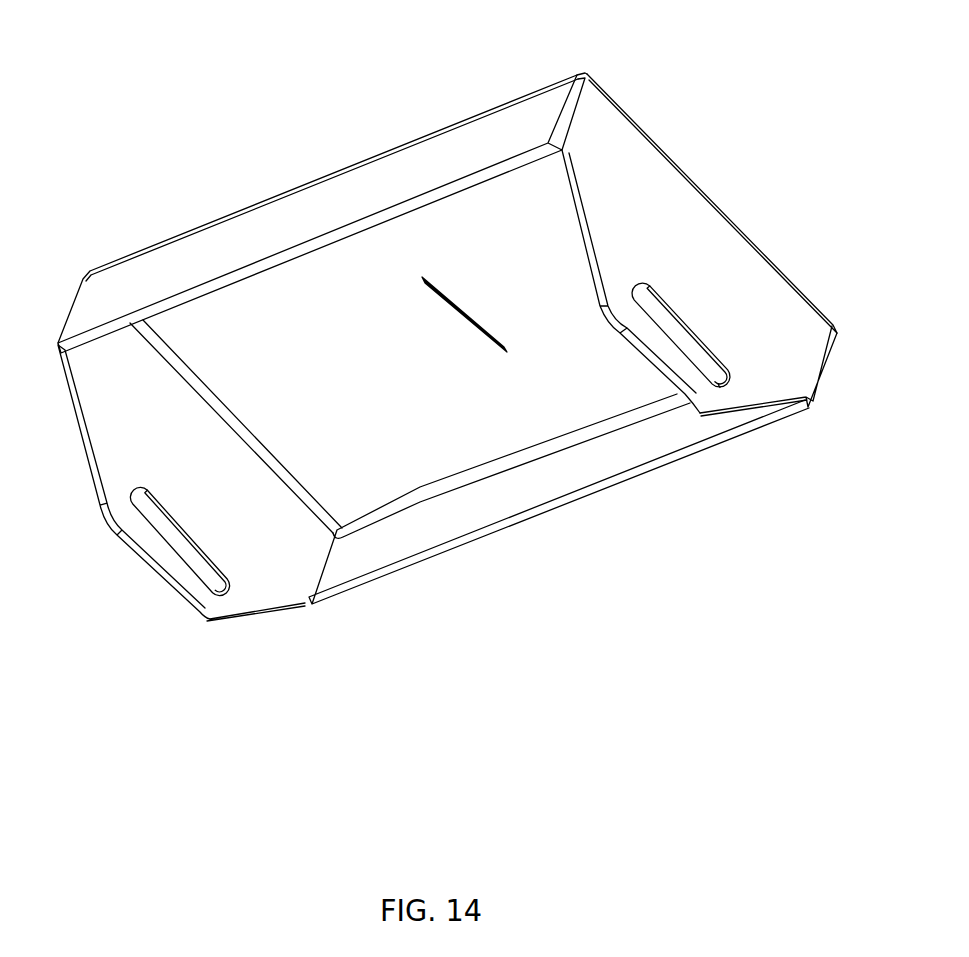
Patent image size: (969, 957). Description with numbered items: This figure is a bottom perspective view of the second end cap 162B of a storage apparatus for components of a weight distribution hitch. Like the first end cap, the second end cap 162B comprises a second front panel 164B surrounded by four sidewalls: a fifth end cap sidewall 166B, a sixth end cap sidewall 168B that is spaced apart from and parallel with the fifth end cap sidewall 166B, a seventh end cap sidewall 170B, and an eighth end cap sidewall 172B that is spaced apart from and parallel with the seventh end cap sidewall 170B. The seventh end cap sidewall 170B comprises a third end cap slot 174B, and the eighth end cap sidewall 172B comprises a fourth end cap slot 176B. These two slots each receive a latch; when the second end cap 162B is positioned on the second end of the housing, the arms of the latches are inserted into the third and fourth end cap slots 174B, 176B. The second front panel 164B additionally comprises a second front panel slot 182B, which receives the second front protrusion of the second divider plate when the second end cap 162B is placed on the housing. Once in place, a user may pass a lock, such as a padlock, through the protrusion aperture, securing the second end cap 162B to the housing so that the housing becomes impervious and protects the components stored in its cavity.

The second end cap 162B is at (247, 237).
The second front panel 164B is at (615, 385).
The fifth end cap sidewall 166B is at (473, 157).
The sixth end cap sidewall 168B is at (500, 488).
The seventh end cap sidewall 170B is at (250, 548).
The eighth end cap sidewall 172B is at (607, 124).
The third end cap slot 174B is at (192, 557).
The fourth end cap slot 176B is at (692, 349).
The second front panel slot 182B is at (431, 274).